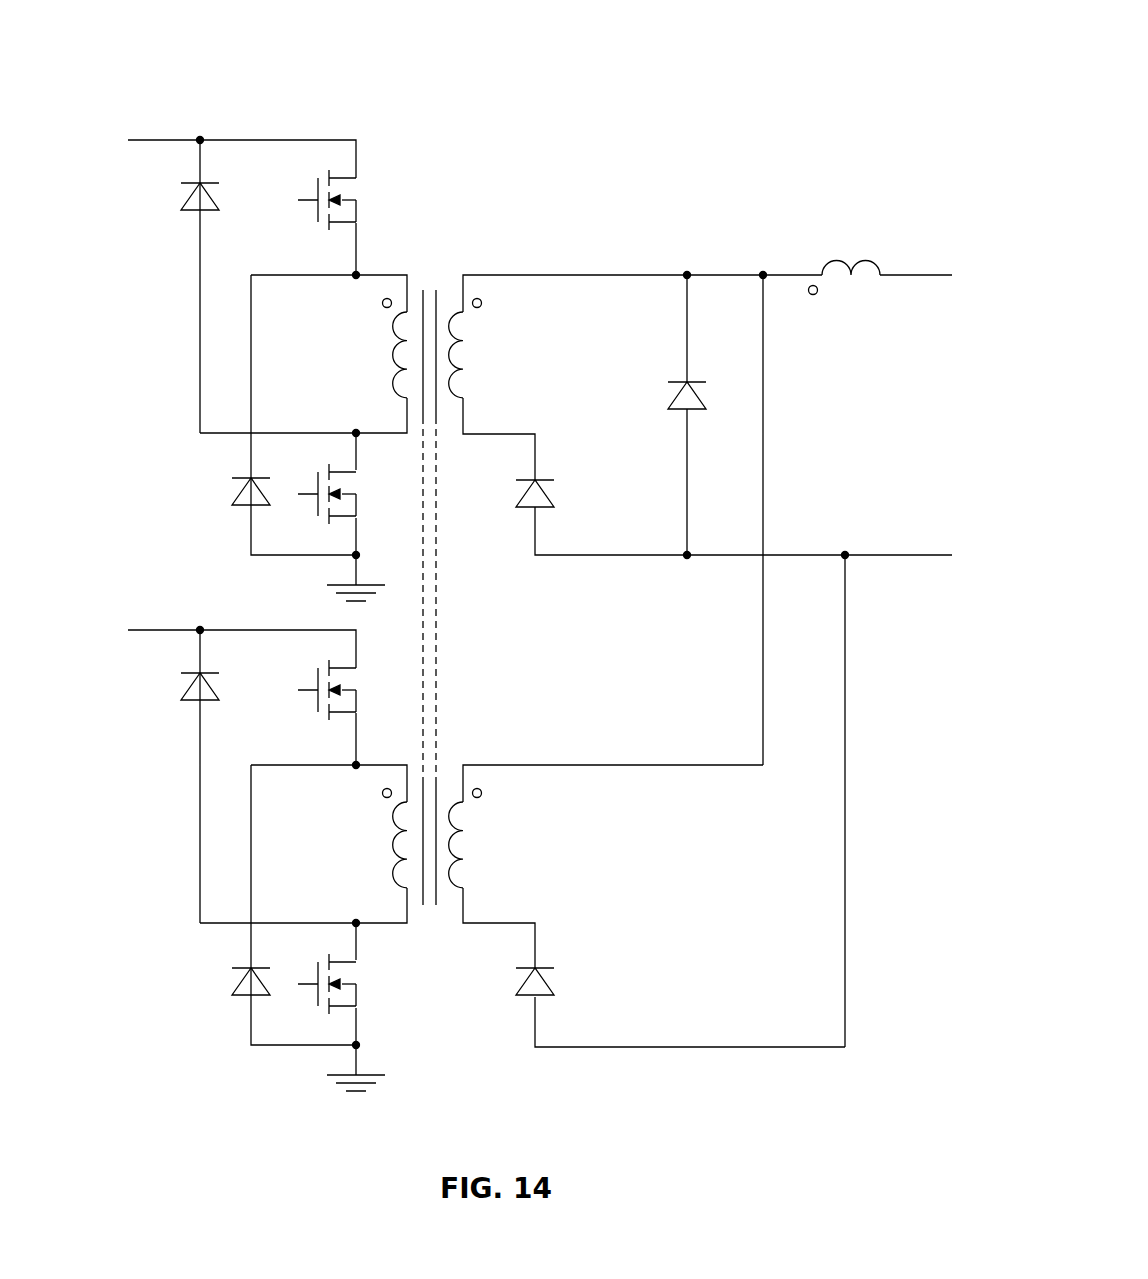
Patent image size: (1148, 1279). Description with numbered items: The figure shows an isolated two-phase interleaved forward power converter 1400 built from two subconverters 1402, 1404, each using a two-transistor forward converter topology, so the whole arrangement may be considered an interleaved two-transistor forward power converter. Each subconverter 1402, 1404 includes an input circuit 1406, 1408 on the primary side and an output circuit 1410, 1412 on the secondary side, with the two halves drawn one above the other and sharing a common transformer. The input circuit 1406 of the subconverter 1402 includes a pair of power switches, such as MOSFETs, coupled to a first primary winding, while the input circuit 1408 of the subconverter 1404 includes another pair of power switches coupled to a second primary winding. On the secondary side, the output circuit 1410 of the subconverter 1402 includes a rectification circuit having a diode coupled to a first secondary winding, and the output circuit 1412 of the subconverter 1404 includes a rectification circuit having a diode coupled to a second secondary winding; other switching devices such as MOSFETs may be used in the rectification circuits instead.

The isolated two-phase interleaved forward power converter 1400 is at (845, 62).
The subconverter 1402 is at (487, 256).
The subconverter 1404 is at (488, 742).
The input circuit 1406 is at (178, 343).
The input circuit 1408 is at (178, 802).
The output circuit 1410 is at (583, 400).
The output circuit 1412 is at (565, 917).